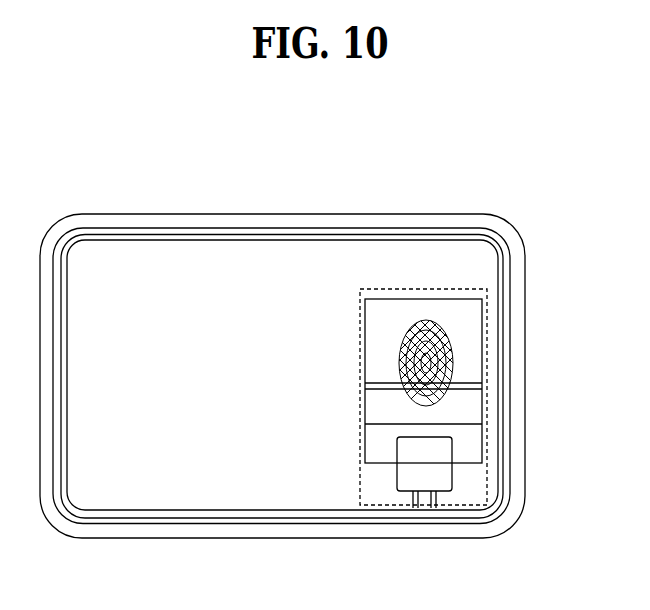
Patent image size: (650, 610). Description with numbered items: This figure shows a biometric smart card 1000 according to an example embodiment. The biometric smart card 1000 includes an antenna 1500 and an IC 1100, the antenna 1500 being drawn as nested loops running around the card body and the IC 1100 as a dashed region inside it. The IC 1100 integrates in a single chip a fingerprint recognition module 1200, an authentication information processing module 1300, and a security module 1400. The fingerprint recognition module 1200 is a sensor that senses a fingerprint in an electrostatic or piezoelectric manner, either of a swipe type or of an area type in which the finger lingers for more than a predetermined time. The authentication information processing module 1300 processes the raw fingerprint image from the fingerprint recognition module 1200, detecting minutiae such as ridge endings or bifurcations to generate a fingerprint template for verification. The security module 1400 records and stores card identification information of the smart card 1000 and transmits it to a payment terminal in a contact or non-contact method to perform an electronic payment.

The biometric smart card 1000 is at (551, 151).
The antenna 1500 is at (230, 228).
The IC 1100 is at (455, 289).
The fingerprint recognition module 1200 is at (482, 352).
The authentication information processing module 1300 is at (397, 482).
The security module 1400 is at (373, 537).